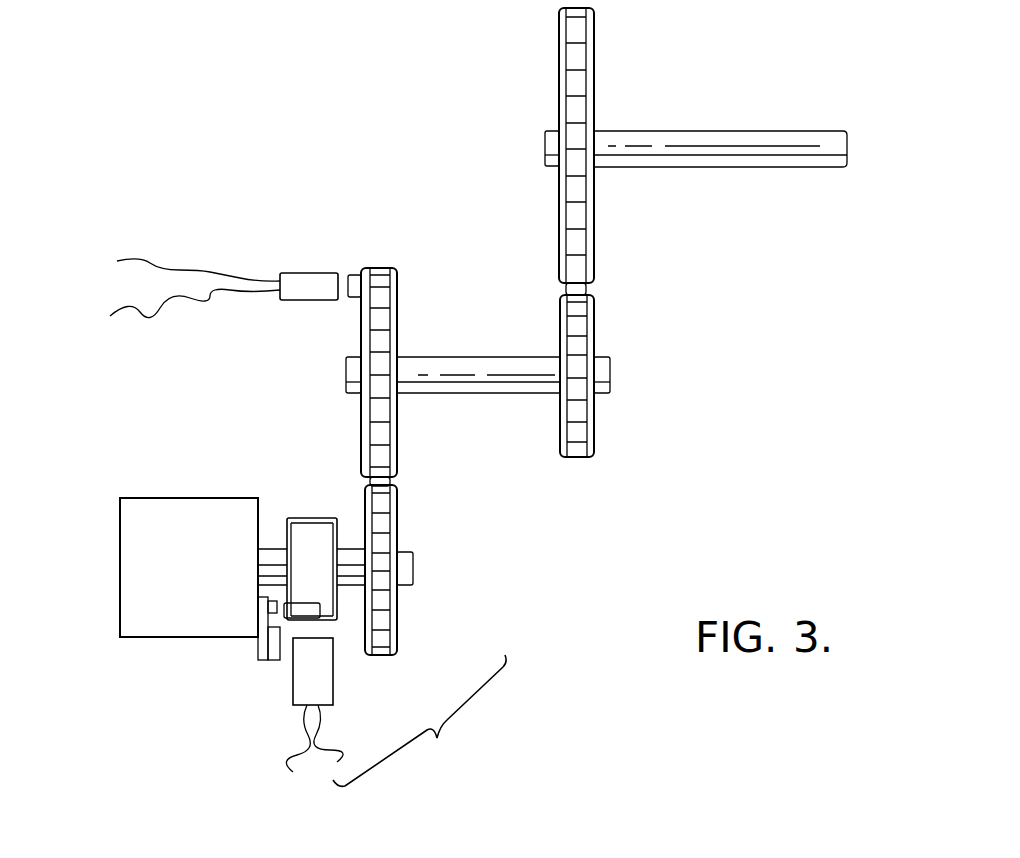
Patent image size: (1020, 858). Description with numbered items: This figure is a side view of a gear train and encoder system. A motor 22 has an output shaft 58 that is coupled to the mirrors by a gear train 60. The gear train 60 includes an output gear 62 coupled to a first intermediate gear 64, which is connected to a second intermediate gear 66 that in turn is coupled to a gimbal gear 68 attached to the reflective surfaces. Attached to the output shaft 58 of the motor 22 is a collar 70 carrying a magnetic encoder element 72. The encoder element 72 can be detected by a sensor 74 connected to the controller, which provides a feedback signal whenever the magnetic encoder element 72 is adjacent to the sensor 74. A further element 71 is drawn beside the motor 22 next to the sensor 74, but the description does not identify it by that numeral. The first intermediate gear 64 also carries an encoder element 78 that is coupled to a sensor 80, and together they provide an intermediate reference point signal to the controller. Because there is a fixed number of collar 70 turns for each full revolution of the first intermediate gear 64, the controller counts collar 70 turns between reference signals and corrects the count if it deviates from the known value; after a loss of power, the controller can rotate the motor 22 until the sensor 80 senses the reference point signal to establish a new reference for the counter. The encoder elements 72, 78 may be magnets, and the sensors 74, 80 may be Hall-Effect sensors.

The motor 22 is at (122, 545).
The output shaft 58 is at (268, 548).
The gear train 60 is at (458, 453).
The output gear 62 is at (388, 620).
The first intermediate gear 64 is at (387, 318).
The second intermediate gear 66 is at (583, 328).
The gimbal gear 68 is at (583, 78).
The collar 70 is at (313, 522).
The bracket 71 is at (259, 662).
The magnetic encoder element 72 is at (303, 612).
The sensor 74 is at (259, 604).
The encoder element 78 is at (353, 275).
The sensor 80 is at (298, 278).